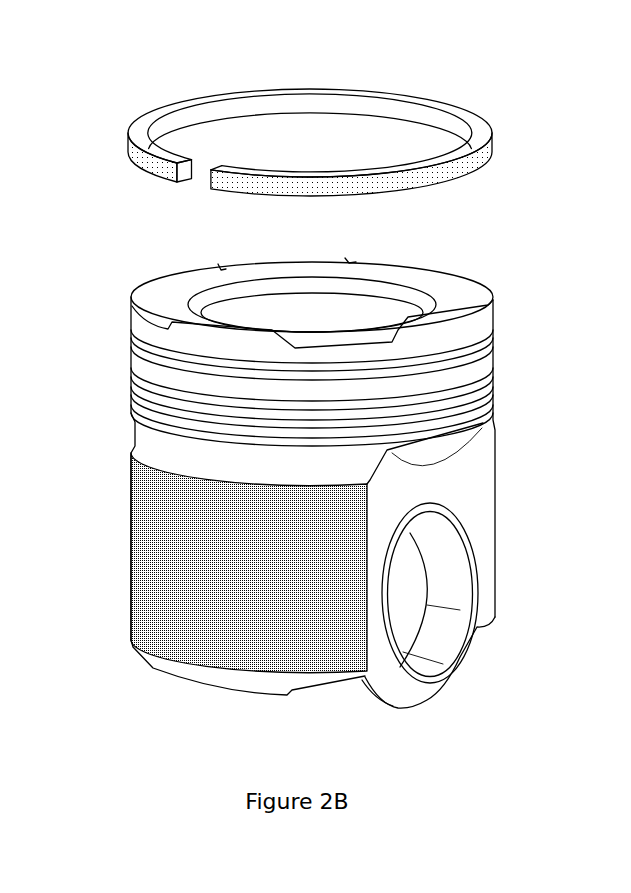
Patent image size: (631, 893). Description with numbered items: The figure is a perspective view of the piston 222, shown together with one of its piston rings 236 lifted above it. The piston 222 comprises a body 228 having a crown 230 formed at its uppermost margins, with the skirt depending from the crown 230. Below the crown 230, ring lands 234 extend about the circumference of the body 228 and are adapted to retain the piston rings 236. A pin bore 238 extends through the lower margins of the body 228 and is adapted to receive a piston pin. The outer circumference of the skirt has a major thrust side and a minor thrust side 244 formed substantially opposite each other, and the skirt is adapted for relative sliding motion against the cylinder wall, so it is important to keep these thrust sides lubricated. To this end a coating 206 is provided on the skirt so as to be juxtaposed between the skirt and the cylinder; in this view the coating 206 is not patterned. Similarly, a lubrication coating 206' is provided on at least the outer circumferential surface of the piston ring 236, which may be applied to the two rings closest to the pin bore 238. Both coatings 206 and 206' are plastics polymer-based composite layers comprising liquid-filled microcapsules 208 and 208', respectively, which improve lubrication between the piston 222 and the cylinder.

The piston ring 236 is at (112, 113).
The lubrication coating 206' is at (371, 145).
The liquid-filled microcapsules 208' is at (250, 159).
The piston 222 is at (112, 248).
The crown 230 is at (499, 264).
The ring lands 234 is at (487, 390).
The coating 206 is at (313, 522).
The liquid-filled microcapsules 208 is at (199, 563).
The minor thrust side 244 is at (202, 670).
The body 228 is at (508, 501).
The pin bore 238 is at (417, 596).